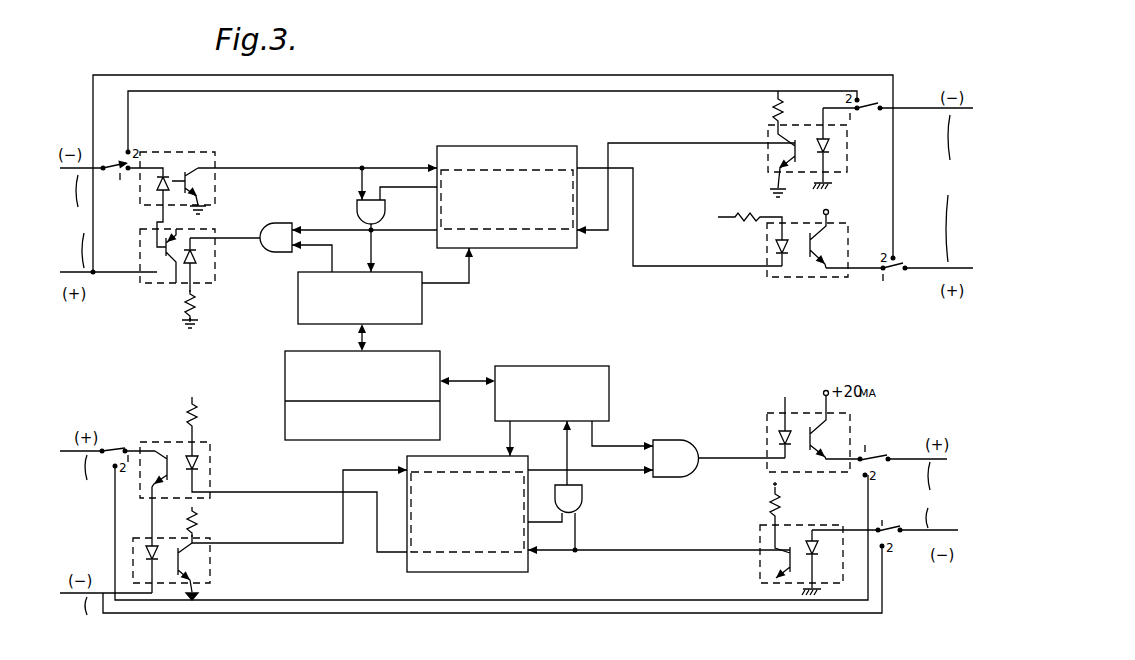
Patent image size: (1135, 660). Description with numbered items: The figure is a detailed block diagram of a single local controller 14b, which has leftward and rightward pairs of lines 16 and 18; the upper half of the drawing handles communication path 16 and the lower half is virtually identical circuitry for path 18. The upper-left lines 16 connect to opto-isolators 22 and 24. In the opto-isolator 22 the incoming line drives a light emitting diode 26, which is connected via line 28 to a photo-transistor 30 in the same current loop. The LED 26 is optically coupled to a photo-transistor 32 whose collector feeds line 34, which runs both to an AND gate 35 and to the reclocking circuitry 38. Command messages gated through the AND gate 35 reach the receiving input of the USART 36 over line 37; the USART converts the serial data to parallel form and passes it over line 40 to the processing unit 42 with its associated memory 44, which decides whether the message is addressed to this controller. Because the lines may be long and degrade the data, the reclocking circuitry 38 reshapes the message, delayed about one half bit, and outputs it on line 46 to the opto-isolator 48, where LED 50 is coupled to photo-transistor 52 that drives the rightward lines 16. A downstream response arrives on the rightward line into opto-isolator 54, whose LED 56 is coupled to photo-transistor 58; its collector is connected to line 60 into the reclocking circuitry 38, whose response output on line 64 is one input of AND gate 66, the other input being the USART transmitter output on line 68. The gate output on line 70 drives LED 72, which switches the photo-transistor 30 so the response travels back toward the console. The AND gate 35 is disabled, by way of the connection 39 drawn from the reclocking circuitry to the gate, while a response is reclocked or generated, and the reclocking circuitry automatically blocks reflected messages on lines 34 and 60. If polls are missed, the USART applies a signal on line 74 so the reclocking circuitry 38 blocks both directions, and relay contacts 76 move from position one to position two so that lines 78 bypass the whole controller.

The local controller 14b is at (576, 566).
The pair of lines 16 is at (516, 191).
The pair of lines 18 is at (509, 542).
The opto-isolator 22 is at (168, 152).
The opto-isolator 24 is at (150, 283).
The light emitting diode 26 is at (157, 181).
The line 28 is at (155, 221).
The photo-transistor 30 is at (152, 262).
The photo-transistor 32 is at (192, 172).
The line 34 is at (328, 168).
The AND gate 35 is at (386, 214).
The universal synchronous/asynchronous receiver/transmitter 36 is at (298, 297).
The line 37 is at (375, 242).
The reclocking circuitry 38 is at (500, 146).
The enable line 39 is at (390, 185).
The line 40 is at (366, 337).
The processing unit 42 is at (442, 352).
The memory 44 is at (285, 413).
The line 46 is at (675, 266).
The opto-isolator 48 is at (805, 277).
The light emitting diode 50 is at (776, 240).
The photo-transistor 52 is at (830, 242).
The opto-isolator 54 is at (812, 108).
The light emitting diode 56 is at (830, 145).
The photo-transistor 58 is at (785, 150).
The line 60 is at (660, 143).
The line 64 is at (326, 230).
The AND gate 66 is at (284, 222).
The line 68 is at (333, 258).
The line 70 is at (234, 238).
The light emitting diode 72 is at (198, 258).
The line 74 is at (467, 288).
The relay contacts 76 is at (118, 162).
The lines 78 is at (555, 75).